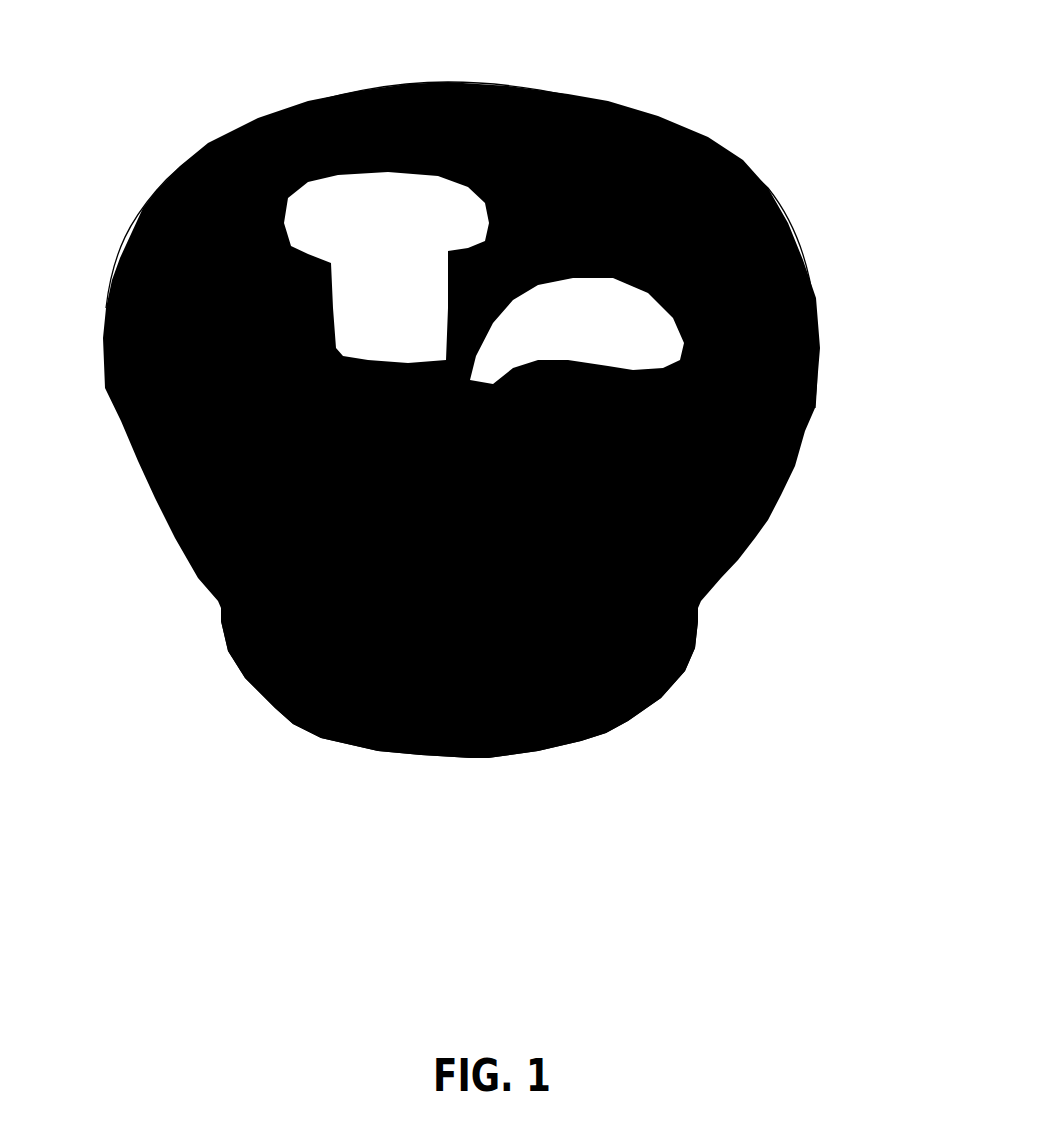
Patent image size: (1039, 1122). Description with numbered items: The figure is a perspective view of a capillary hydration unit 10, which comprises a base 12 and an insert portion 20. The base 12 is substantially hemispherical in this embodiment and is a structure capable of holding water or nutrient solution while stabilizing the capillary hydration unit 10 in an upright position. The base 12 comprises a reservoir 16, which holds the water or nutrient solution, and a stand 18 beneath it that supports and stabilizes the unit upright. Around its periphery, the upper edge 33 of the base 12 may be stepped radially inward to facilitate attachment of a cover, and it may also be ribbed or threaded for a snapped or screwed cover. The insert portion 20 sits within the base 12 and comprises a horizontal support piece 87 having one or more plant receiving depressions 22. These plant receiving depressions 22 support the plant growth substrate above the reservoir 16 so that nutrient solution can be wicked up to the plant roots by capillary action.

The capillary hydration unit 10 is at (491, 390).
The base 12 is at (486, 390).
The reservoir 16 is at (743, 532).
The stand 18 is at (673, 663).
The insert portion 20 is at (812, 312).
The plant receiving depressions 22 is at (587, 358).
The upper edge 33 is at (143, 208).
The horizontal support piece 87 is at (505, 160).